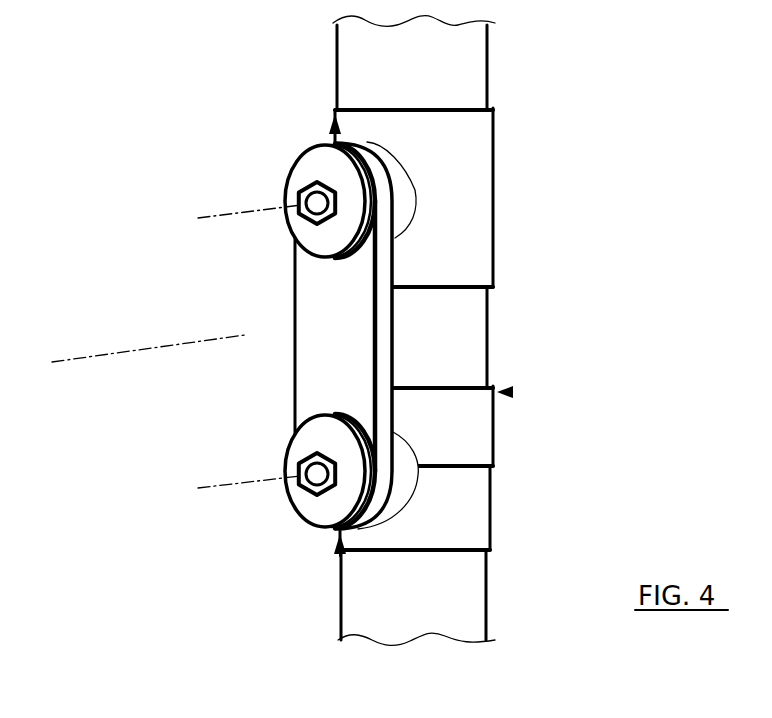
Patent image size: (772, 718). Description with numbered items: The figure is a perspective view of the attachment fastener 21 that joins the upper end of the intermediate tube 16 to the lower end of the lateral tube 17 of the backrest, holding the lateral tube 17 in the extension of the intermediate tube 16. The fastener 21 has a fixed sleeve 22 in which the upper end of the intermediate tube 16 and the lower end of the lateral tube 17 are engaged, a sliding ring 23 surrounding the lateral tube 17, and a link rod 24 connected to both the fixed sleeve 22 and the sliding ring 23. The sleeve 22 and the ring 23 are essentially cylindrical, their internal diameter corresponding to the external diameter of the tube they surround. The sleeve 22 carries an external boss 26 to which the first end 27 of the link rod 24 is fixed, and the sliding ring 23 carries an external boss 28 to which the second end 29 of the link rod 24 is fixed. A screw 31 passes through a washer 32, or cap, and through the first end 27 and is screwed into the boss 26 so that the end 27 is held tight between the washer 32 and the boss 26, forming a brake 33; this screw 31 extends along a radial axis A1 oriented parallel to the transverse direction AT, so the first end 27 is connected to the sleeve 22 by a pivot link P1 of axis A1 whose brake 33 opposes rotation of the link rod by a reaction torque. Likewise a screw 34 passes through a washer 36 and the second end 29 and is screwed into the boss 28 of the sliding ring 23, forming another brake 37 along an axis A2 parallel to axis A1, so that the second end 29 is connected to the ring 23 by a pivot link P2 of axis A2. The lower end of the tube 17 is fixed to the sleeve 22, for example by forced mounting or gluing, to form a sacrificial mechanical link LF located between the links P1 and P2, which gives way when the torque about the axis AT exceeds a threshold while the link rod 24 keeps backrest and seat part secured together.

The intermediate tube 16 is at (345, 628).
The lateral tube 17 is at (338, 52).
The attachment fastener 21 is at (120, 106).
The fixed sleeve 22 is at (463, 507).
The sliding ring 23 is at (482, 247).
The link rod 24 is at (352, 345).
The external boss 26 is at (402, 458).
The first end 27 is at (382, 488).
The external boss 28 is at (407, 202).
The second end 29 is at (383, 188).
The screw 31 is at (315, 478).
The washer 32 is at (318, 437).
The brake 33 is at (336, 554).
The screw 34 is at (315, 208).
The washer 36 is at (318, 157).
The brake 37 is at (329, 124).
The pivot link P1 is at (261, 450).
The pivot link P2 is at (266, 170).
The axis A1 is at (227, 485).
The axis A2 is at (227, 217).
The transverse axis AT is at (95, 357).
The sacrificial mechanical link LF is at (510, 392).